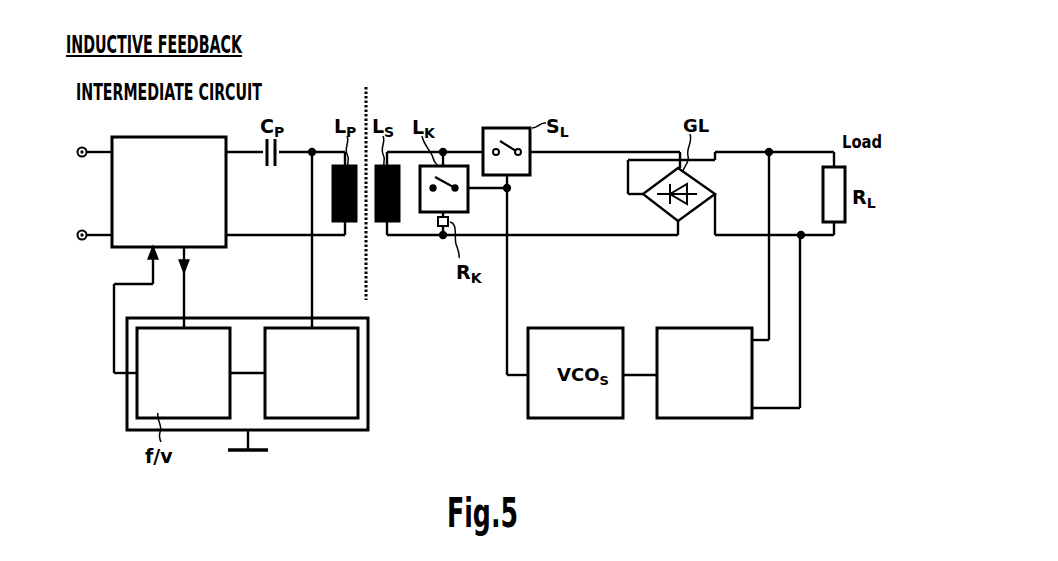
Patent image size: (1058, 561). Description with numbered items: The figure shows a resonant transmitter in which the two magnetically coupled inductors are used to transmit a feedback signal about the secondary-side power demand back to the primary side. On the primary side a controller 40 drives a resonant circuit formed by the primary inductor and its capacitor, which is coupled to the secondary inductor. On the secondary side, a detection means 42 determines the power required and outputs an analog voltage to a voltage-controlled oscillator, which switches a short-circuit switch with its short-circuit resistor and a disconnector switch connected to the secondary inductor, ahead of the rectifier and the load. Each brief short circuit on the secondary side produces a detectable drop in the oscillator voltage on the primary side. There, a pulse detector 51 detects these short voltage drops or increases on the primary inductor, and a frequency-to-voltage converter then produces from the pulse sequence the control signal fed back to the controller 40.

The controller 40 is at (127, 245).
The detection means 42 is at (675, 419).
The pulse detector 51 is at (333, 413).